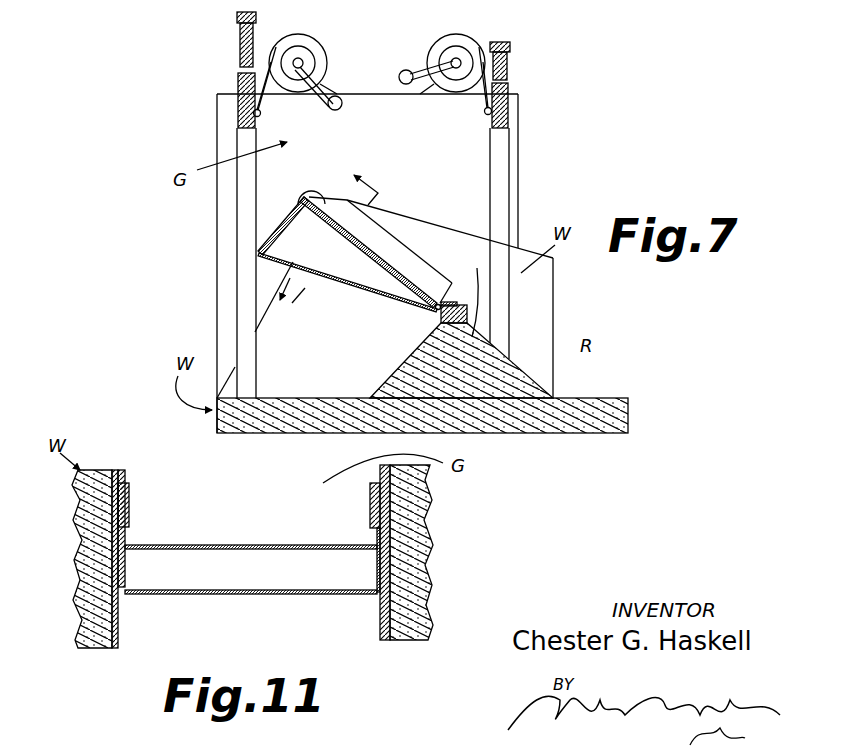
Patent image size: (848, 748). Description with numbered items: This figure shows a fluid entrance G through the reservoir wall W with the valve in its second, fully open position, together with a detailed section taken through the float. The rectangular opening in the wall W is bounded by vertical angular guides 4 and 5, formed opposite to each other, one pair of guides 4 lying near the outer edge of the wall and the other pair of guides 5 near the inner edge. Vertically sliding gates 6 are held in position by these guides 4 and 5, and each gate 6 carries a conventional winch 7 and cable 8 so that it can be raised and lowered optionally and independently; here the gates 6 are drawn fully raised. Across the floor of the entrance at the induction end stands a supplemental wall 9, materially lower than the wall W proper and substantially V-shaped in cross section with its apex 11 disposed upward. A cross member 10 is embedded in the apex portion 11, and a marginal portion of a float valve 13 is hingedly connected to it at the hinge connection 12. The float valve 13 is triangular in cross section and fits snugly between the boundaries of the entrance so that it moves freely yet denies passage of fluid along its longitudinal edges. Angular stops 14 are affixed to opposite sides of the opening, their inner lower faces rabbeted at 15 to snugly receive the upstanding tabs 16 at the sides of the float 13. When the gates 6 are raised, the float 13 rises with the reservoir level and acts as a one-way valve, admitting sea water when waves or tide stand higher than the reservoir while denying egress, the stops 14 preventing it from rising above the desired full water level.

In FIG. 7, the vertical angular guide 4 is at (245, 203).
In FIG. 7, the vertical angular guide 5 is at (498, 178).
In FIG. 7, the vertically sliding gate 6 is at (245, 42).
In FIG. 7, the winch 7 is at (306, 57).
In FIG. 7, the cable 8 is at (262, 102).
In FIG. 7, the supplemental wall 9 is at (490, 372).
In FIG. 7, the cross member 10 is at (468, 327).
In FIG. 7, the apex 11 is at (350, 281).
In FIG. 7, the hinge connection 12 is at (436, 308).
In FIG. 7, the float valve 13 is at (340, 264).
In FIG. 11, the float valve 13 is at (217, 562).
In FIG. 7, the angular stop 14 is at (365, 230).
In FIG. 11, the angular stop 14 is at (123, 493).
In FIG. 11, the rabbet 15 is at (120, 503).
In FIG. 11, the upstanding tab 16 is at (126, 537).